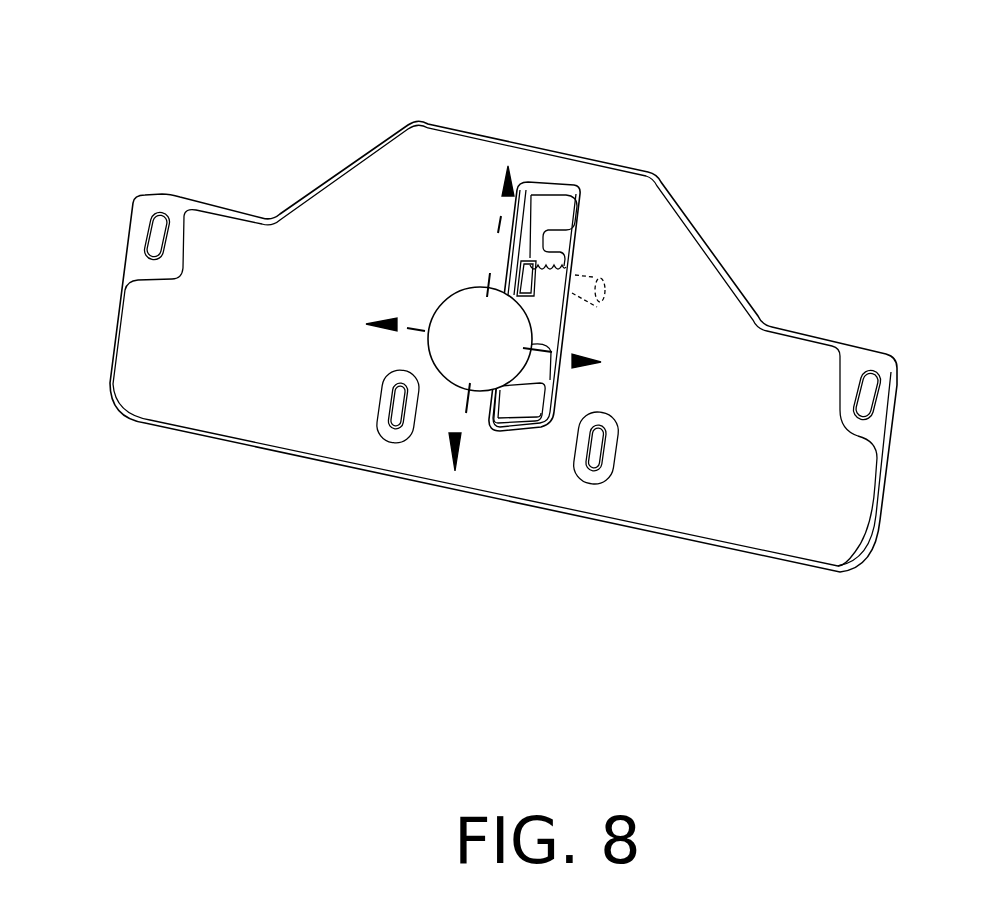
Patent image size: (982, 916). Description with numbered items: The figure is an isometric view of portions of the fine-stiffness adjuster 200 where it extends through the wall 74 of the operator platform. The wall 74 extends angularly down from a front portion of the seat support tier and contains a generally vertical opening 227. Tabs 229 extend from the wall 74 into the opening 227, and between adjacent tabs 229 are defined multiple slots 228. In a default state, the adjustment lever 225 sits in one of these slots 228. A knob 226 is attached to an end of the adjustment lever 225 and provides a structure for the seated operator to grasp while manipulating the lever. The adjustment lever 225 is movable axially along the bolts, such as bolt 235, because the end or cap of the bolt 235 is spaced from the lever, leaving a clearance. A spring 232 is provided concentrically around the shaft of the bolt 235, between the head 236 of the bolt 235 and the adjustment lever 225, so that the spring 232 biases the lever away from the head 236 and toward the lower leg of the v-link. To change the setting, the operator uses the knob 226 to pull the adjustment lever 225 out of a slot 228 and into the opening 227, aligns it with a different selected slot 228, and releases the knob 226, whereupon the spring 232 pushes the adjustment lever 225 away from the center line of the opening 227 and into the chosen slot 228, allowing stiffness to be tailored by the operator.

The mounting bracket assembly 200 is at (465, 287).
The wall 74 is at (227, 280).
The slot 228 is at (553, 216).
The opening 227 is at (553, 201).
The spring 232 is at (543, 252).
The tab 229 is at (540, 284).
The adjustment lever 225 is at (568, 360).
The head 236 is at (525, 305).
The knob 226 is at (440, 340).
The bolt 235 is at (598, 314).